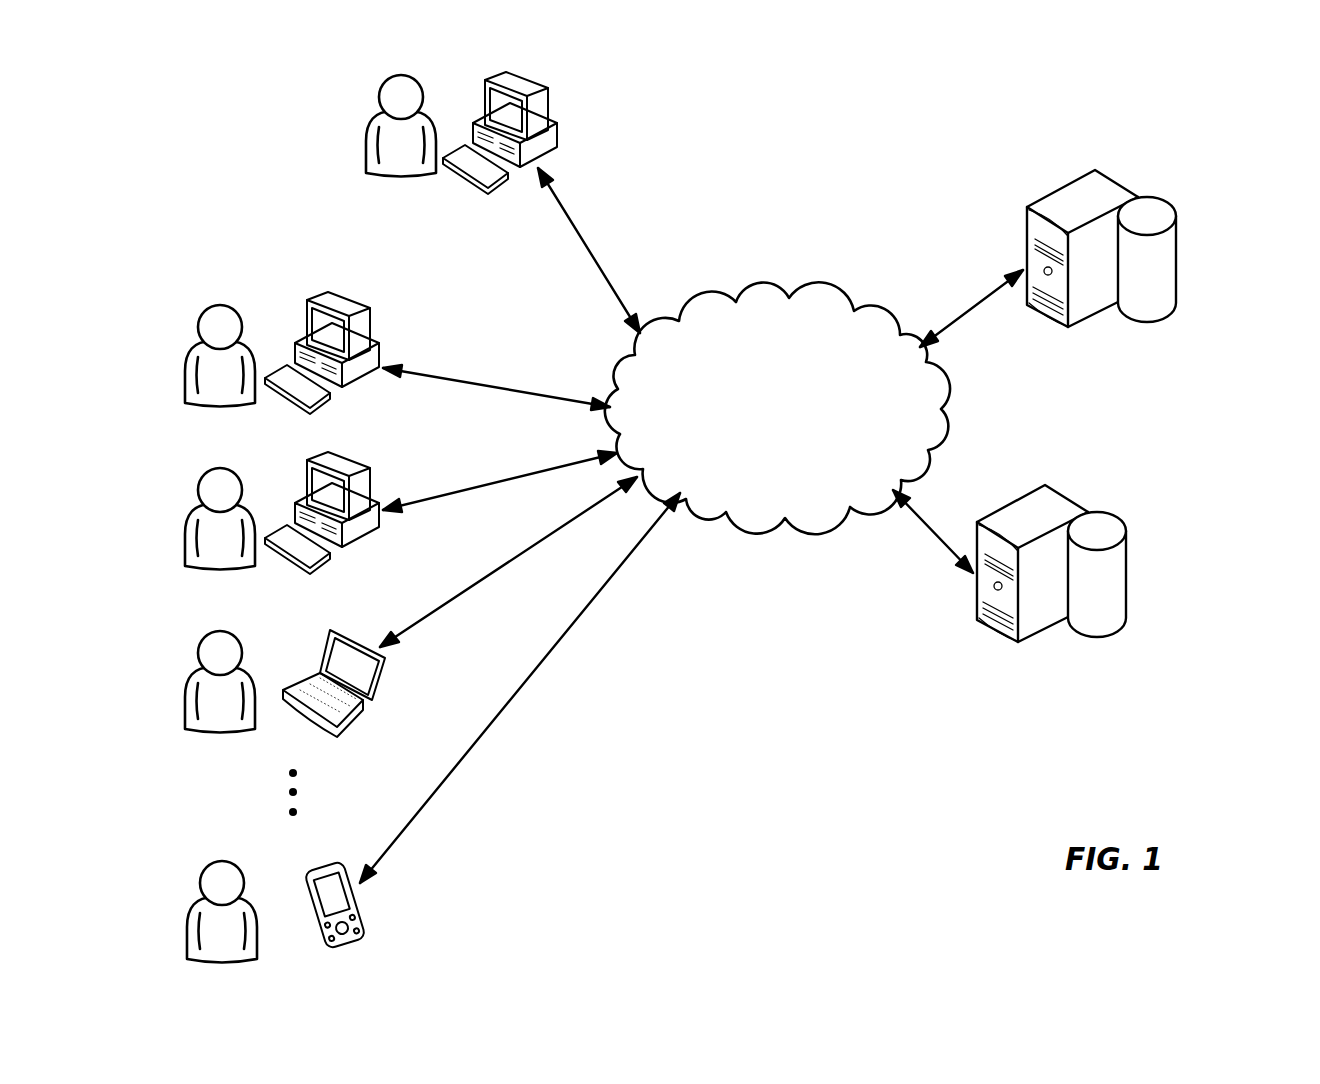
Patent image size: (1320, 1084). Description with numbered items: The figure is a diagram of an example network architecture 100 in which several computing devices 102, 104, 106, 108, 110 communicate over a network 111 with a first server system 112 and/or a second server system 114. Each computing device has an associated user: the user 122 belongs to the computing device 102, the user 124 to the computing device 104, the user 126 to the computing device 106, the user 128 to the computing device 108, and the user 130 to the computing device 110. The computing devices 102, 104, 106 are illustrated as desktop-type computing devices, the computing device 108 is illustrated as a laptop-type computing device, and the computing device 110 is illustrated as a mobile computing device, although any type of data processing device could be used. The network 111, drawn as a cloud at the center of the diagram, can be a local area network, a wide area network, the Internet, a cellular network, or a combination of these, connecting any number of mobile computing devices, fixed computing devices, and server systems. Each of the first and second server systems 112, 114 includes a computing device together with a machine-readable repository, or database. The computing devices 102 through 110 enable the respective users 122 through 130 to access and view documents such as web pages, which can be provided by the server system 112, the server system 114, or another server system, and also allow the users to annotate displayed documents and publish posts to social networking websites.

The network architecture 100 is at (899, 143).
The computing device 102 is at (505, 80).
The computing device 104 is at (325, 298).
The computing device 106 is at (325, 458).
The laptop-type computing device 108 is at (333, 630).
The mobile computing device 110 is at (315, 866).
The network 111 is at (790, 297).
The first server system 112 is at (1033, 336).
The second server system 114 is at (981, 654).
The user 122 is at (380, 118).
The user 124 is at (233, 305).
The user 126 is at (233, 472).
The user 128 is at (238, 638).
The user 130 is at (238, 868).